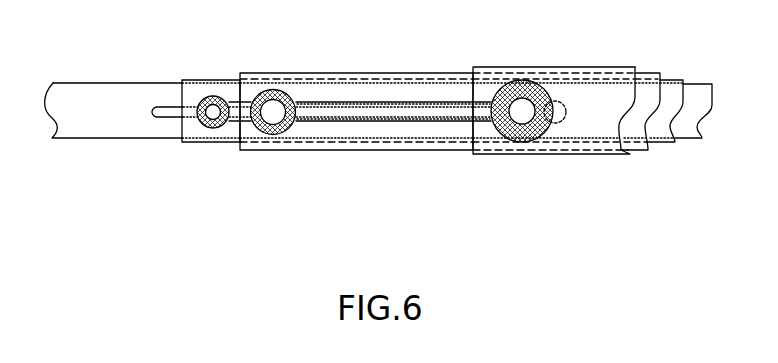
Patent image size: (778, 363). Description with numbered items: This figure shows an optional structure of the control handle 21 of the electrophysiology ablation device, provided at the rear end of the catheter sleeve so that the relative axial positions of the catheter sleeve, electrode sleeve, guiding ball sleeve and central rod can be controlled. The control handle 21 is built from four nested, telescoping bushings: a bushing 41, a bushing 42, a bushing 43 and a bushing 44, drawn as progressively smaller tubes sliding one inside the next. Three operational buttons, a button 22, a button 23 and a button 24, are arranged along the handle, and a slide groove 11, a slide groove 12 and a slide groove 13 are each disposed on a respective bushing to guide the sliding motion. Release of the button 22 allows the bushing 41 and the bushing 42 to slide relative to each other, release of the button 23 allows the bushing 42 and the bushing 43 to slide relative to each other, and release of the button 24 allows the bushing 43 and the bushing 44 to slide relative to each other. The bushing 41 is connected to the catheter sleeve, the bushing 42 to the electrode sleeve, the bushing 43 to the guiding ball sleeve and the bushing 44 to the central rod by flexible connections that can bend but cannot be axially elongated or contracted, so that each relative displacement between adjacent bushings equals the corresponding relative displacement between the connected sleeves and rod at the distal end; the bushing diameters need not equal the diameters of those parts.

The slide groove 11 is at (453, 112).
The slide groove 12 is at (345, 110).
The slide groove 13 is at (168, 112).
The control handle 21 is at (390, 197).
The button 22 is at (515, 140).
The button 23 is at (273, 133).
The button 24 is at (208, 127).
The bushing 41 is at (540, 68).
The bushing 42 is at (313, 73).
The bushing 43 is at (198, 80).
The bushing 44 is at (103, 82).